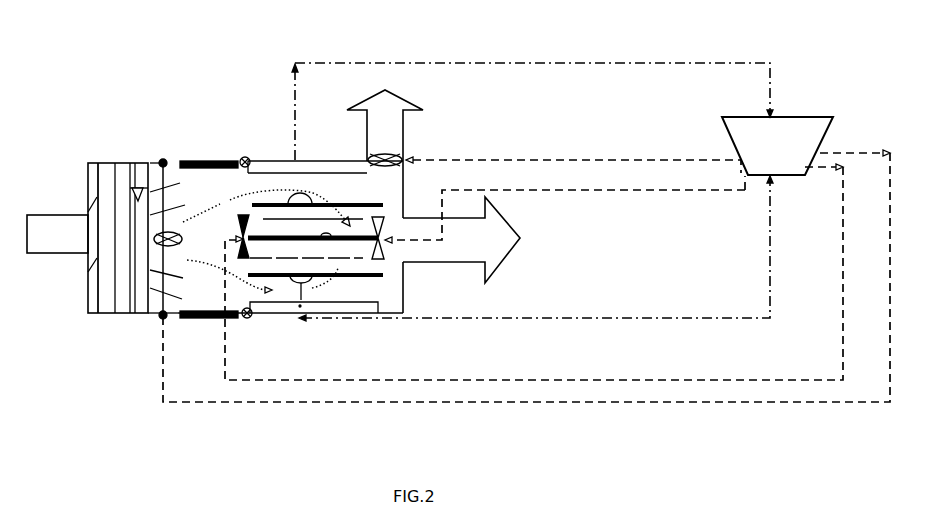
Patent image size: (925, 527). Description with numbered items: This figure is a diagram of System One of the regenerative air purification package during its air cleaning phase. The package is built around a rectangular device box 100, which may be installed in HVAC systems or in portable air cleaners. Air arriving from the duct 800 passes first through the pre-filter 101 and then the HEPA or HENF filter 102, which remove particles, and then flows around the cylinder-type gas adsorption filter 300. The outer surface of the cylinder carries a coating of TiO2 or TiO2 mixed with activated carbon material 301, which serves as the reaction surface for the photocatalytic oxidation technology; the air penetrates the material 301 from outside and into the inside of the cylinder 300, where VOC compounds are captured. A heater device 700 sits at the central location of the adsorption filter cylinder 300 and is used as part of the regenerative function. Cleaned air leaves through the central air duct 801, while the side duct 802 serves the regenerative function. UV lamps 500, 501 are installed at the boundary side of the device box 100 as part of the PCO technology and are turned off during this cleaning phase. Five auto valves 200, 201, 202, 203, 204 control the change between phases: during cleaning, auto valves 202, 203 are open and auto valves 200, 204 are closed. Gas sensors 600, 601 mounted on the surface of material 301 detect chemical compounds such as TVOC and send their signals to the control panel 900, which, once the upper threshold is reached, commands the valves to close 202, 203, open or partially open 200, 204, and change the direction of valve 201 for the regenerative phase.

The device box 100 is at (80, 280).
The pre-filter 101 is at (122, 223).
The HEPA or HENF filter 102 is at (135, 187).
The auto valve 200 is at (246, 254).
The auto valve 201 is at (160, 255).
The auto valve 202 is at (243, 160).
The auto valve 203 is at (385, 250).
The auto valve 204 is at (406, 159).
The gas adsorption filter cylinder 300 is at (265, 198).
The TiO2 coating material 301 is at (354, 195).
The UV lamp 500 is at (283, 322).
The UV lamp 501 is at (305, 158).
The gas sensor 600 is at (314, 286).
The gas sensor 601 is at (292, 184).
The heater device 700 is at (336, 252).
The air duct 800 is at (57, 234).
The air duct 801 is at (461, 240).
The side duct 802 is at (385, 125).
The control panel 900 is at (777, 146).